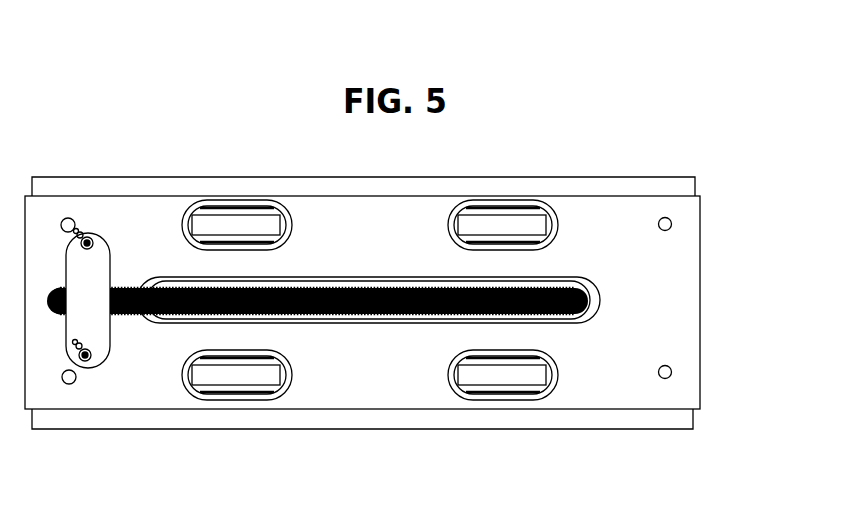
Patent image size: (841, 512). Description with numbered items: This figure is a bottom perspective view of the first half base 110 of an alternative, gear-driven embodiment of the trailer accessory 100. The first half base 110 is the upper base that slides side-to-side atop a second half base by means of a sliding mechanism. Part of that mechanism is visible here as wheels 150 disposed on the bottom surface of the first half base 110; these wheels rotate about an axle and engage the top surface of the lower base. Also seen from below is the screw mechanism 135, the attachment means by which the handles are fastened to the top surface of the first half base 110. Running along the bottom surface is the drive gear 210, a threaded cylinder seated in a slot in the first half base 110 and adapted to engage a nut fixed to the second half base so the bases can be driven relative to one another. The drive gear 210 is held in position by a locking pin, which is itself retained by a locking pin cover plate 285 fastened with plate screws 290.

The trailer accessory 100 is at (247, 121).
The first half base 110 is at (700, 313).
The screw mechanism 135 is at (672, 222).
The wheels 150 is at (525, 213).
The drive gear 210 is at (402, 315).
The locking pin cover plate 285 is at (98, 325).
The plate screws 290 is at (80, 348).